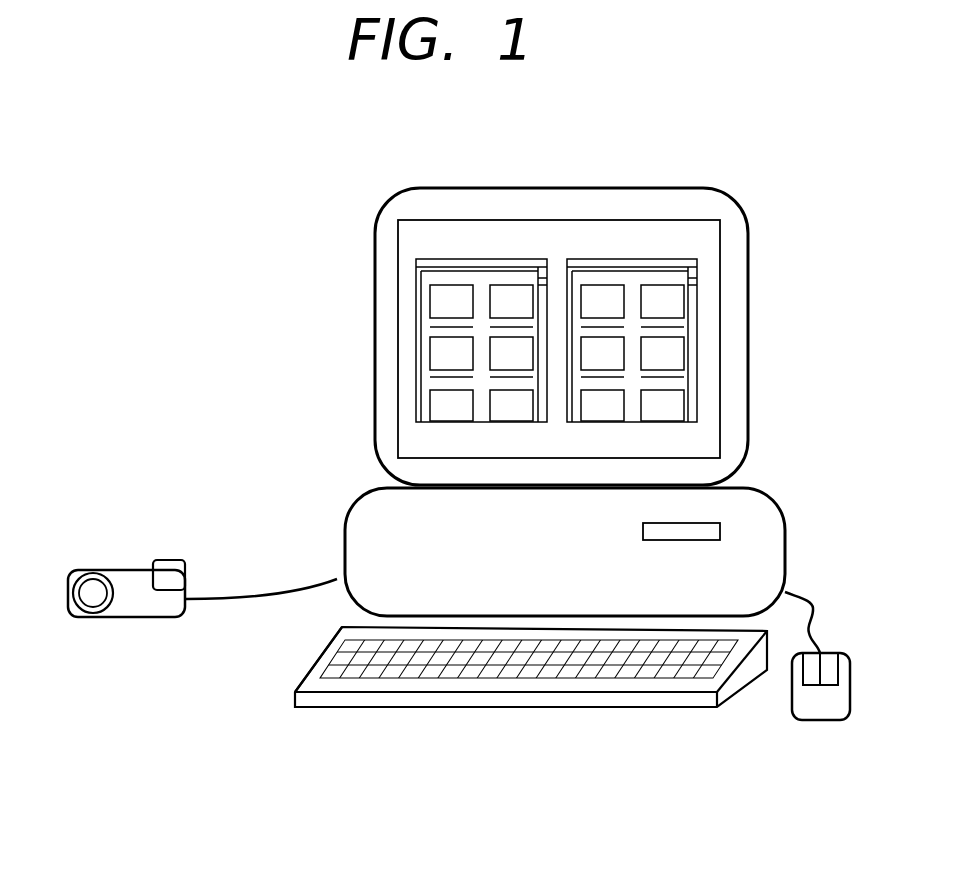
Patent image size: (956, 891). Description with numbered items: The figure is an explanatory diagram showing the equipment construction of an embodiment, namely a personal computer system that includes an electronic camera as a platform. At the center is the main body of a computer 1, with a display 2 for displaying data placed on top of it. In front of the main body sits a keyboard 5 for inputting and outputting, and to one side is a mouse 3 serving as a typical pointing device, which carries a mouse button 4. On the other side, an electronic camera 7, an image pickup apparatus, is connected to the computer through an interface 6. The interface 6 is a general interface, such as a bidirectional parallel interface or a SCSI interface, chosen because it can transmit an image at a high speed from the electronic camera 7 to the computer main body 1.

The main body of a computer 1 is at (787, 527).
The display 2 is at (710, 248).
The mouse 3 is at (818, 713).
The mouse button 4 is at (823, 667).
The keyboard 5 is at (471, 661).
The interface 6 is at (260, 593).
The electronic camera 7 is at (127, 567).